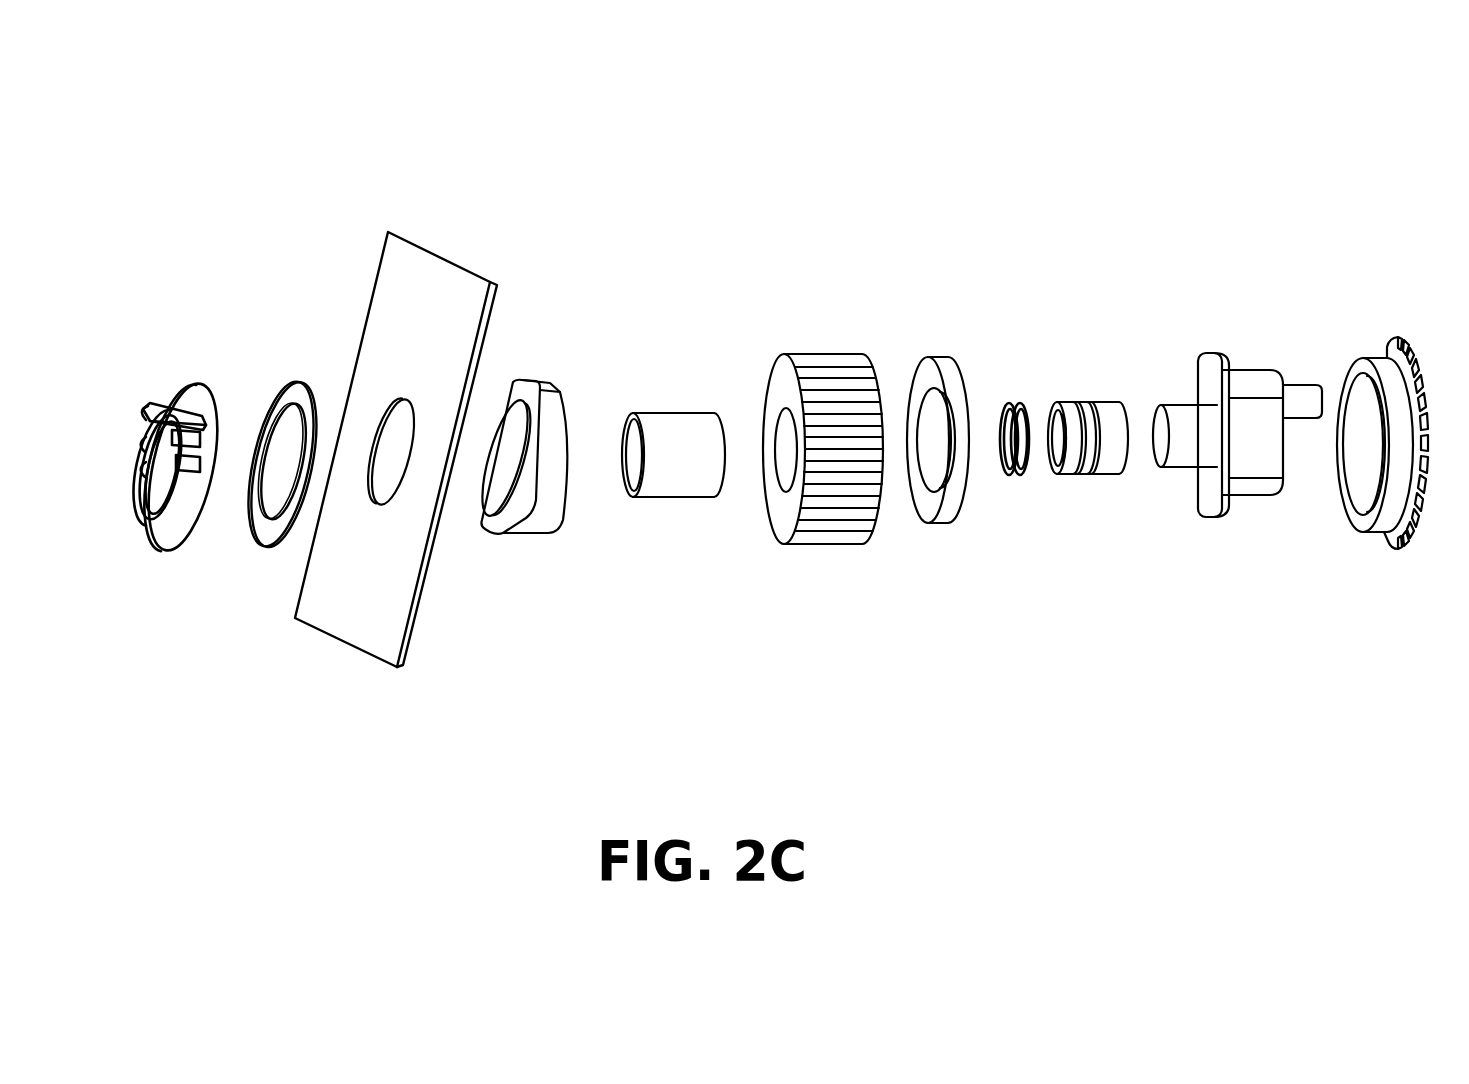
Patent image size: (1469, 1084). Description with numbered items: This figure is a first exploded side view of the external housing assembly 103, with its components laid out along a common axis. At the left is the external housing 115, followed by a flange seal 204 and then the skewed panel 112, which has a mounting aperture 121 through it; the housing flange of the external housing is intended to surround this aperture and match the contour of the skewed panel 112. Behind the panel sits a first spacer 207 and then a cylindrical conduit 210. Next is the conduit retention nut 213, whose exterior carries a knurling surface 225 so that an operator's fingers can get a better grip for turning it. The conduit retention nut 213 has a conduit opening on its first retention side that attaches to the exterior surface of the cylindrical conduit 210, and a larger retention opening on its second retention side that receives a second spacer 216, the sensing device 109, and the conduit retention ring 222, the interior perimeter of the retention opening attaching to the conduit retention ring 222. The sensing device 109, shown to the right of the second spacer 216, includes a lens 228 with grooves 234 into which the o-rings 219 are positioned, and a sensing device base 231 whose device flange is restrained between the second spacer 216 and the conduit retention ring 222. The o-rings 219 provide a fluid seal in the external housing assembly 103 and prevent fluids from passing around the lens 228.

The external housing assembly 103 is at (972, 150).
The sensing device 109 is at (1320, 357).
The skewed panel 112 is at (488, 278).
The external housing 115 is at (187, 382).
The mounting aperture 121 is at (392, 390).
The flange seal 204 is at (268, 547).
The first spacer 207 is at (553, 534).
The cylindrical conduit 210 is at (707, 497).
The conduit retention nut 213 is at (838, 544).
The second spacer 216 is at (952, 523).
The o-rings 219 is at (1017, 383).
The conduit retention ring 222 is at (1397, 549).
The knurling surface 225 is at (833, 338).
The lens 228 is at (1112, 474).
The sensing device base 231 is at (1260, 495).
The grooves 234 is at (1082, 386).